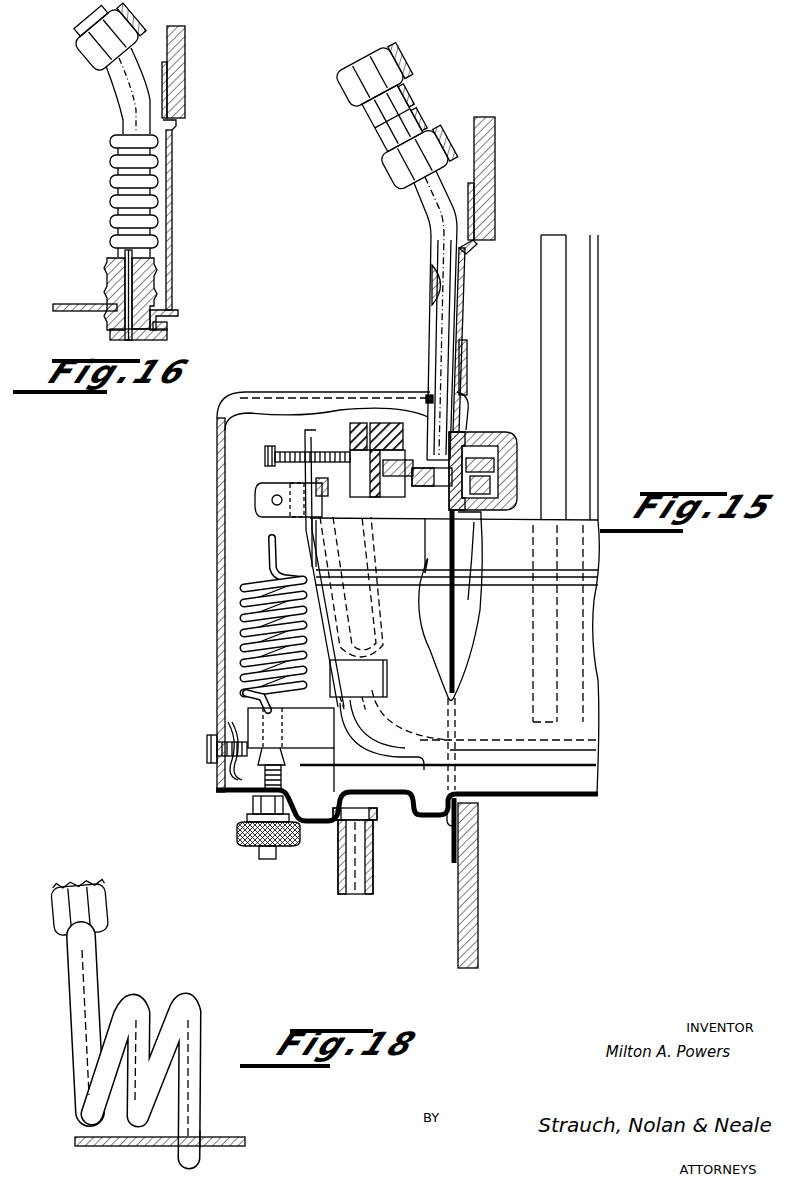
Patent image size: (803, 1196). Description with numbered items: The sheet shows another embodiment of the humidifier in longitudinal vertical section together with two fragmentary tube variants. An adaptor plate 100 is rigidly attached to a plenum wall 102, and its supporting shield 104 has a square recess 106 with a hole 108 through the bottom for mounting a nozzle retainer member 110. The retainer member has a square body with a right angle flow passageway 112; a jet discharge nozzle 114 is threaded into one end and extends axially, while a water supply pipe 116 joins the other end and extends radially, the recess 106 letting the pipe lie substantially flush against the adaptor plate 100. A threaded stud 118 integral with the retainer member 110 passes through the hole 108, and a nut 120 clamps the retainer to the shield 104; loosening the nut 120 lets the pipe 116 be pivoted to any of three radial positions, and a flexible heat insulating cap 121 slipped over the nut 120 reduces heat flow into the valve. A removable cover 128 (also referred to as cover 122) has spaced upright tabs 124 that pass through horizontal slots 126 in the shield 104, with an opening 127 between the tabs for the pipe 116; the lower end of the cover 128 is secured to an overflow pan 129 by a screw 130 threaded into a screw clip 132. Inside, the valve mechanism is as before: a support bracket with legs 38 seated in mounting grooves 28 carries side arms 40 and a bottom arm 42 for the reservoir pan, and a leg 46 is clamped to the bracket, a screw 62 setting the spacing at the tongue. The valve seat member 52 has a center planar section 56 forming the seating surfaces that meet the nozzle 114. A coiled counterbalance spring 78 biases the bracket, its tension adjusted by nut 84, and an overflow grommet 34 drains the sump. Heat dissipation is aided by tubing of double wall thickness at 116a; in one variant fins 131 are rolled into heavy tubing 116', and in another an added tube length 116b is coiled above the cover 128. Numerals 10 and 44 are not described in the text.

In FIG. 15, the tank 10 is at (585, 752).
In FIG. 15, the mounting grooves 28 is at (333, 818).
In FIG. 15, the overflow grommet 34 is at (373, 855).
In FIG. 15, the legs 38 is at (328, 786).
In FIG. 15, the side arms 40 is at (385, 676).
In FIG. 15, the bottom arm 42 is at (376, 751).
In FIG. 15, the thermostatic element 44 is at (396, 600).
In FIG. 15, the leg 46 is at (266, 537).
In FIG. 15, the valve seat member 52 is at (360, 423).
In FIG. 15, the center planar section 56 is at (386, 423).
In FIG. 15, the screw 62 is at (268, 452).
In FIG. 15, the counterbalance spring 78 is at (243, 624).
In FIG. 15, the nut 84 is at (250, 846).
In FIG. 16, the adaptor plate 100 is at (173, 157).
In FIG. 15, the adaptor plate 100 is at (449, 831).
In FIG. 16, the plenum wall 102 is at (185, 55).
In FIG. 15, the plenum wall 102 is at (496, 192).
In FIG. 15, the adaptor plate (supporting shield) 104 is at (481, 524).
In FIG. 15, the square recess 106 is at (455, 522).
In FIG. 15, the hole 108 is at (471, 433).
In FIG. 15, the nozzle retainer member 110 is at (414, 500).
In FIG. 15, the flow passageway 112 is at (436, 487).
In FIG. 15, the jet discharge nozzle 114 is at (401, 497).
In FIG. 15, the water supply pipe 116 is at (396, 250).
In FIG. 16, the finned heavy tubing 116' is at (106, 128).
In FIG. 15, the double wall thickness tubing 116a is at (433, 286).
In FIG. 18, the coiled tube 116b is at (216, 1030).
In FIG. 15, the threaded stud 118 is at (495, 466).
In FIG. 15, the nut 120 is at (500, 436).
In FIG. 15, the heat insulating cap 121 is at (492, 488).
In FIG. 15, the cover 122 is at (312, 403).
In FIG. 15, the upright tabs 124 is at (468, 368).
In FIG. 15, the horizontal slots 126 is at (469, 407).
In FIG. 16, the opening 127 is at (112, 318).
In FIG. 18, the opening 127 is at (205, 1138).
In FIG. 15, the opening 127 is at (428, 398).
In FIG. 16, the removable cover 128 is at (62, 304).
In FIG. 18, the removable cover 128 is at (103, 1146).
In FIG. 15, the removable cover 128 is at (227, 404).
In FIG. 15, the overflow pan 129 is at (516, 797).
In FIG. 15, the screw 130 is at (207, 761).
In FIG. 16, the fins 131 is at (158, 275).
In FIG. 15, the screw clip 132 is at (228, 720).